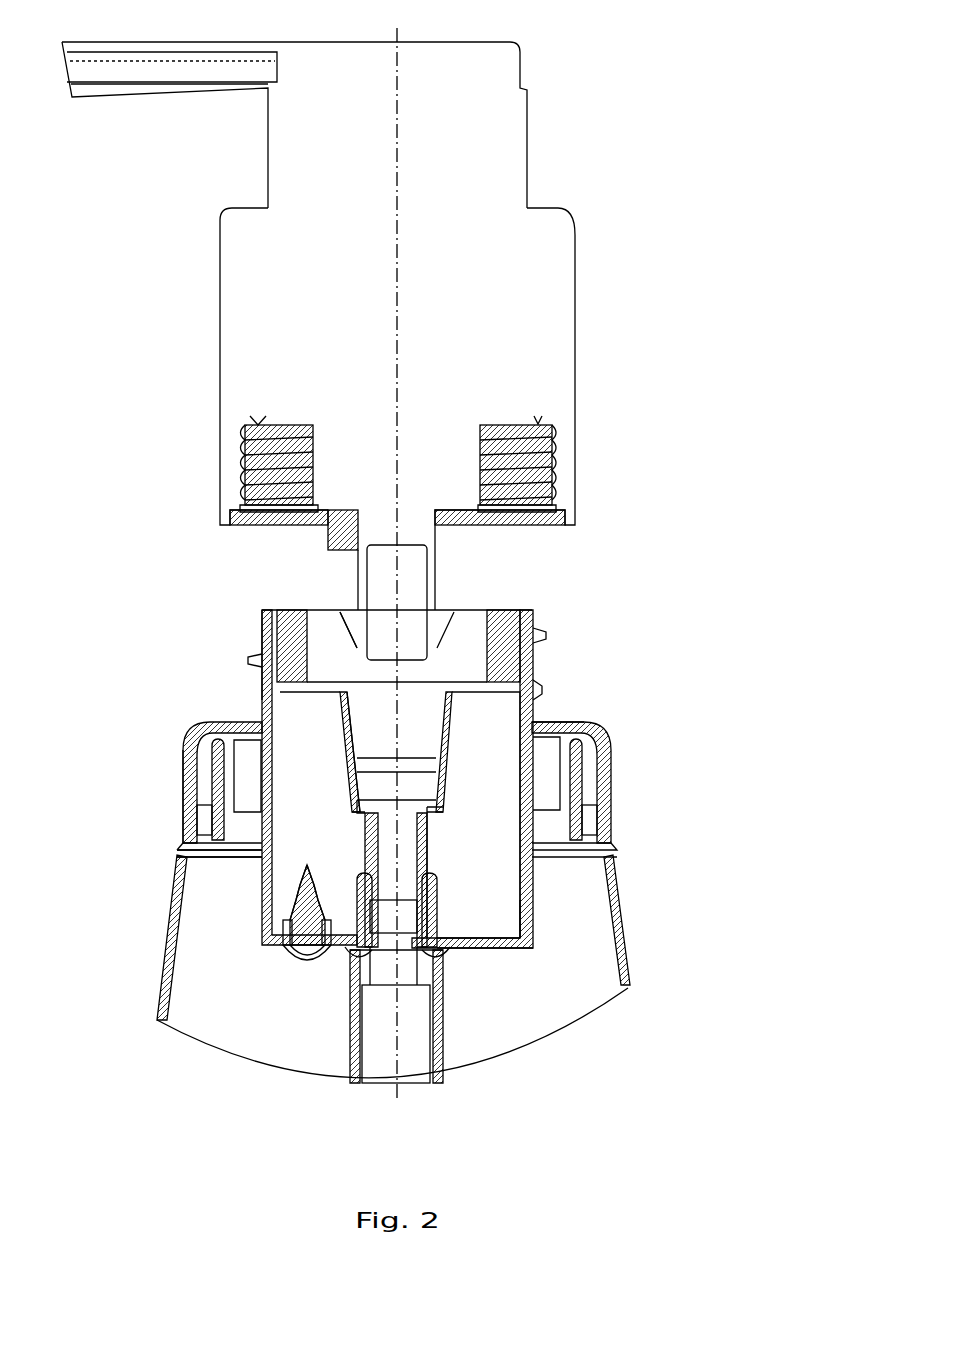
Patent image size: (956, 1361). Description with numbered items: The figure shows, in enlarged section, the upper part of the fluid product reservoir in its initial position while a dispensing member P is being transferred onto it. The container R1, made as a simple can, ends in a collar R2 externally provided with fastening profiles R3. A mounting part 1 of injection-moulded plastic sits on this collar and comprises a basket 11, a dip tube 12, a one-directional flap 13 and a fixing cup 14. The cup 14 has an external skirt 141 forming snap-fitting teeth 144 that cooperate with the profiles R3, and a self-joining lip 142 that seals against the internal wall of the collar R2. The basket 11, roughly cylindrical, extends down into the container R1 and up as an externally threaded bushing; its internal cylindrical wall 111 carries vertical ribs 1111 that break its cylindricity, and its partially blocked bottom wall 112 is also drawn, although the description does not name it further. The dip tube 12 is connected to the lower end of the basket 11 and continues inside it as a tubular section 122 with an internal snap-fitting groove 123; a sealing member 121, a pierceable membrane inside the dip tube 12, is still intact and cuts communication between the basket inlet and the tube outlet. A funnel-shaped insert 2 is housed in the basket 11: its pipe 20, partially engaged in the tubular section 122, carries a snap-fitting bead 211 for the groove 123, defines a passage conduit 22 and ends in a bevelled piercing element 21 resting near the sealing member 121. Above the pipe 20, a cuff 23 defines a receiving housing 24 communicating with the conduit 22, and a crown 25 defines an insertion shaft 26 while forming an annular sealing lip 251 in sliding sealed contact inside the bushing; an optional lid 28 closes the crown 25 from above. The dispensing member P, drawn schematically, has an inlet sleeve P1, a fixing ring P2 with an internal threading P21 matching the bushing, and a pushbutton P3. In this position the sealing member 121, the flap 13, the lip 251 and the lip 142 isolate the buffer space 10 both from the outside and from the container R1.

The mounting part 1 is at (543, 881).
The buffer space 10 is at (487, 848).
The basket 11 is at (508, 958).
The internal cylindrical wall 111 is at (580, 722).
The vertical rib 1111 is at (540, 690).
The bottom wall 112 is at (470, 950).
The dip tube 12 is at (351, 958).
The sealing member 121 is at (390, 942).
The tubular section 122 is at (430, 900).
The snap-fitting groove 123 is at (360, 975).
The one-directional flap 13 is at (279, 956).
The fixing cup 14 is at (184, 752).
The external skirt 141 is at (183, 775).
The self-joining lip 142 is at (210, 806).
The snap-fitting tooth 144 is at (180, 850).
The insert 2 is at (462, 712).
The pipe 20 is at (357, 878).
The piercing element 21 is at (367, 920).
The snap-fitting bead 211 is at (363, 828).
The passage conduit 22 is at (363, 847).
The cuff 23 is at (343, 723).
The receiving housing 24 is at (380, 773).
The crown 25 is at (503, 650).
The annular sealing lip 251 is at (538, 634).
The insertion shaft 26 is at (453, 647).
The lid 28 is at (362, 650).
The dispensing member P is at (558, 181).
The inlet sleeve P1 is at (438, 610).
The fixing ring P2 is at (553, 465).
The internal threading P21 is at (535, 424).
The pushbutton P3 is at (425, 42).
The container R1 is at (620, 927).
The collar R2 is at (612, 750).
The fastening profile R3 is at (588, 793).